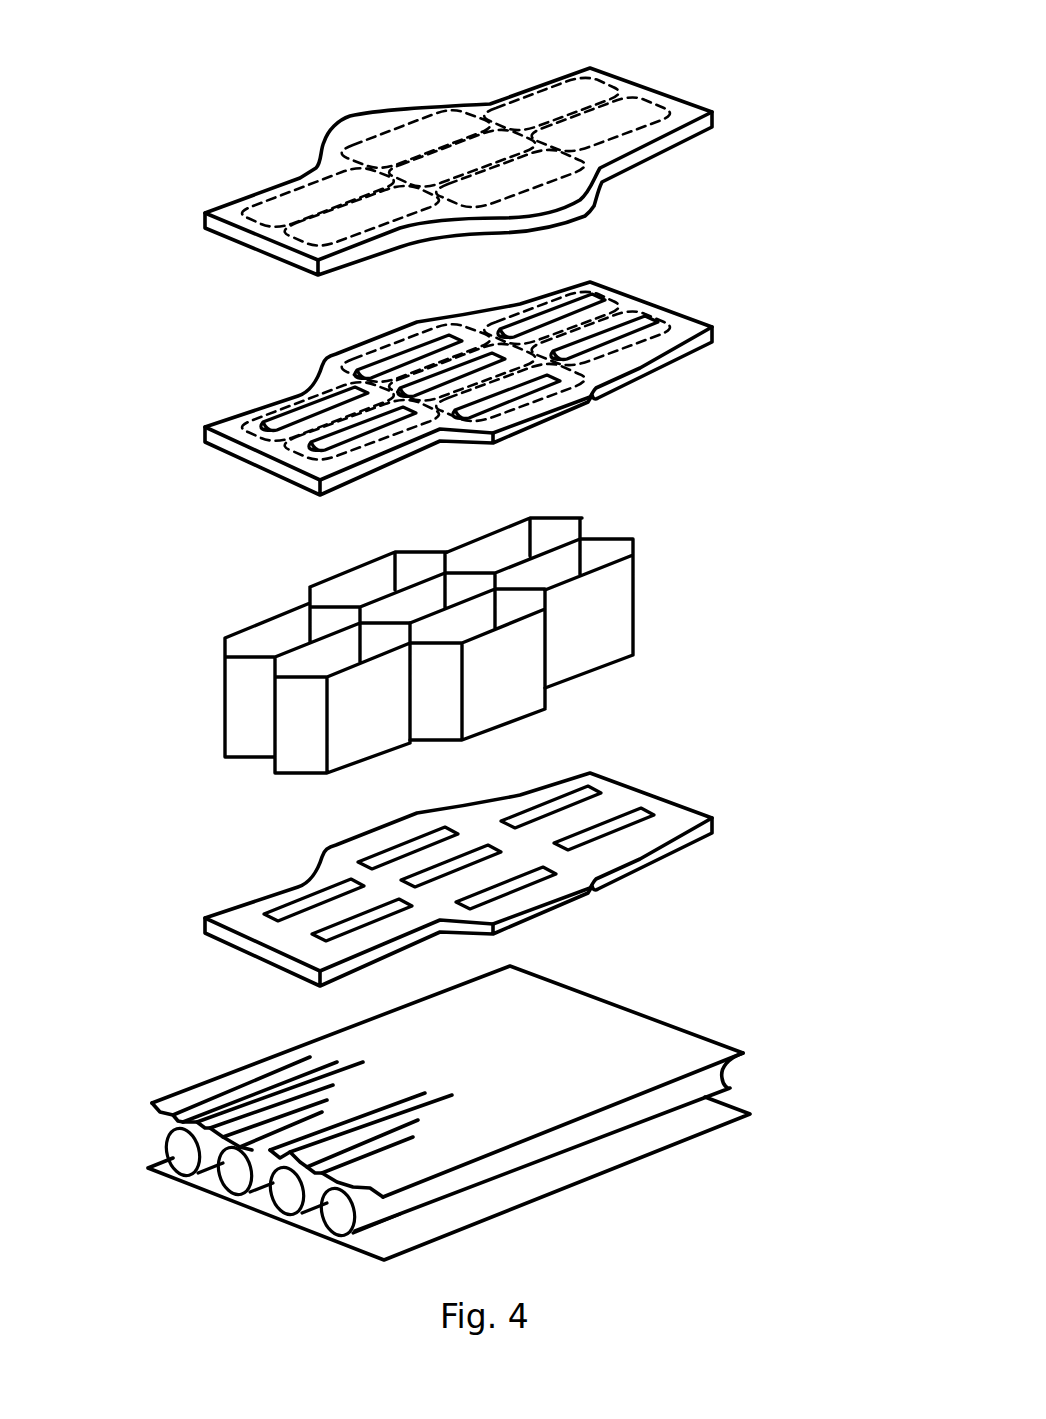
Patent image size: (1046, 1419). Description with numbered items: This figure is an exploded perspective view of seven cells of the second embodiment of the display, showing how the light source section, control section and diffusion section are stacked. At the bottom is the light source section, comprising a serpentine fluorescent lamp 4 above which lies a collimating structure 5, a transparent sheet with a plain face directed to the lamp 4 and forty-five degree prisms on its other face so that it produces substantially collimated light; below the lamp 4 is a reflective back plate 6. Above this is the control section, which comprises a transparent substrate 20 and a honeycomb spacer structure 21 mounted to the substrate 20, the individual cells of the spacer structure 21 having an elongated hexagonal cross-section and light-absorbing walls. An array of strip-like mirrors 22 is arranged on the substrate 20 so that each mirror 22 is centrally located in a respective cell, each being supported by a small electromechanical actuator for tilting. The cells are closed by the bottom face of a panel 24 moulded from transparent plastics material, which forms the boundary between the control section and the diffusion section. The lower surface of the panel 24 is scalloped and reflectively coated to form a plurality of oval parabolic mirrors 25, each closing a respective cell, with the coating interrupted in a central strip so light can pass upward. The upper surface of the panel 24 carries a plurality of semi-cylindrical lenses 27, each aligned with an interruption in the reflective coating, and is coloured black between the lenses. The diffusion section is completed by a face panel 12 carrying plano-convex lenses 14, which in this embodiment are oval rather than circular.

The serpentine fluorescent lamp 4 is at (343, 1220).
The collimating structure 5 is at (618, 1034).
The reflective back plate 6 is at (579, 1183).
The face panel 12 is at (687, 108).
The plano-convex lenses 14 is at (587, 93).
The transparent substrate 20 is at (660, 823).
The honeycomb spacer structure 21 is at (593, 650).
The strip-like mirrors 22 is at (320, 897).
The panel 24 is at (588, 393).
The oval parabolic mirrors 25 is at (290, 445).
The semi-cylindrical lenses 27 is at (650, 322).